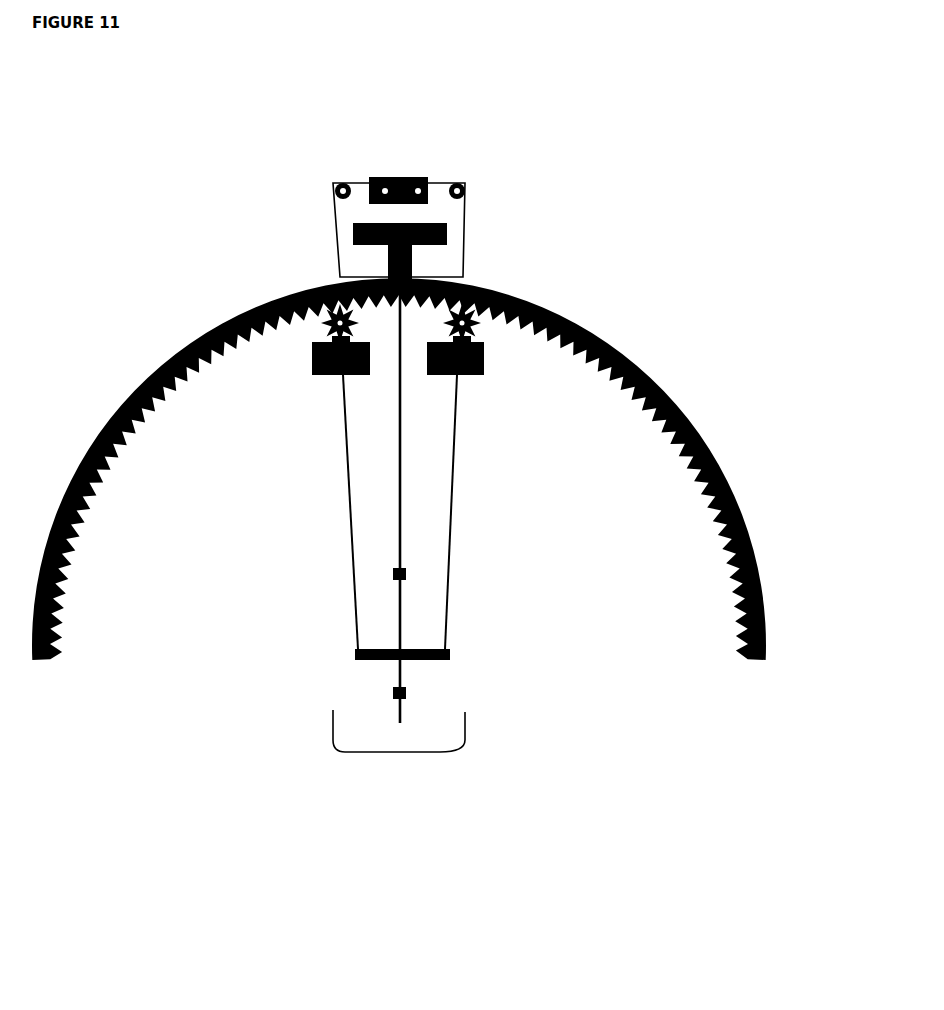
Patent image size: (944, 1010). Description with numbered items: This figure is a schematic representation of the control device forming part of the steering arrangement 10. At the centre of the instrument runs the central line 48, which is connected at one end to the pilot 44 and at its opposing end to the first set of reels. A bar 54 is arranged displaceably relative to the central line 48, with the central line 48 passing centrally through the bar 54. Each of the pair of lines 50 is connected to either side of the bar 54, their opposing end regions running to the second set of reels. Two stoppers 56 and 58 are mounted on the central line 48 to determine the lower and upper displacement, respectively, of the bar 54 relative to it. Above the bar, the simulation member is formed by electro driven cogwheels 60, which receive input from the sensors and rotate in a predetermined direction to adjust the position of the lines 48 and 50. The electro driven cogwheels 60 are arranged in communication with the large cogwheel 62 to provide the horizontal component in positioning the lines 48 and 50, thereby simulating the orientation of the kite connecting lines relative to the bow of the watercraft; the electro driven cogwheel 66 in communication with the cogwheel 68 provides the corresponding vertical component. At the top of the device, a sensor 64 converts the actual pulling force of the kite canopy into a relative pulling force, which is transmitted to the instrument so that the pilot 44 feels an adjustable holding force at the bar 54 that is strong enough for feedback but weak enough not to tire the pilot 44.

The steering arrangement 10 is at (177, 873).
The pilot 44 is at (435, 745).
The central line 48 is at (403, 473).
The pair of lines 50 is at (353, 587).
The bar 54 is at (433, 660).
The stopper 56 is at (393, 692).
The stopper 58 is at (406, 573).
The electro driven cogwheels 60 is at (313, 363).
The cogwheel 62 is at (598, 333).
The sensor 64 is at (422, 180).
The electro driven cogwheel 66 is at (413, 253).
The cogwheel 68 is at (442, 223).